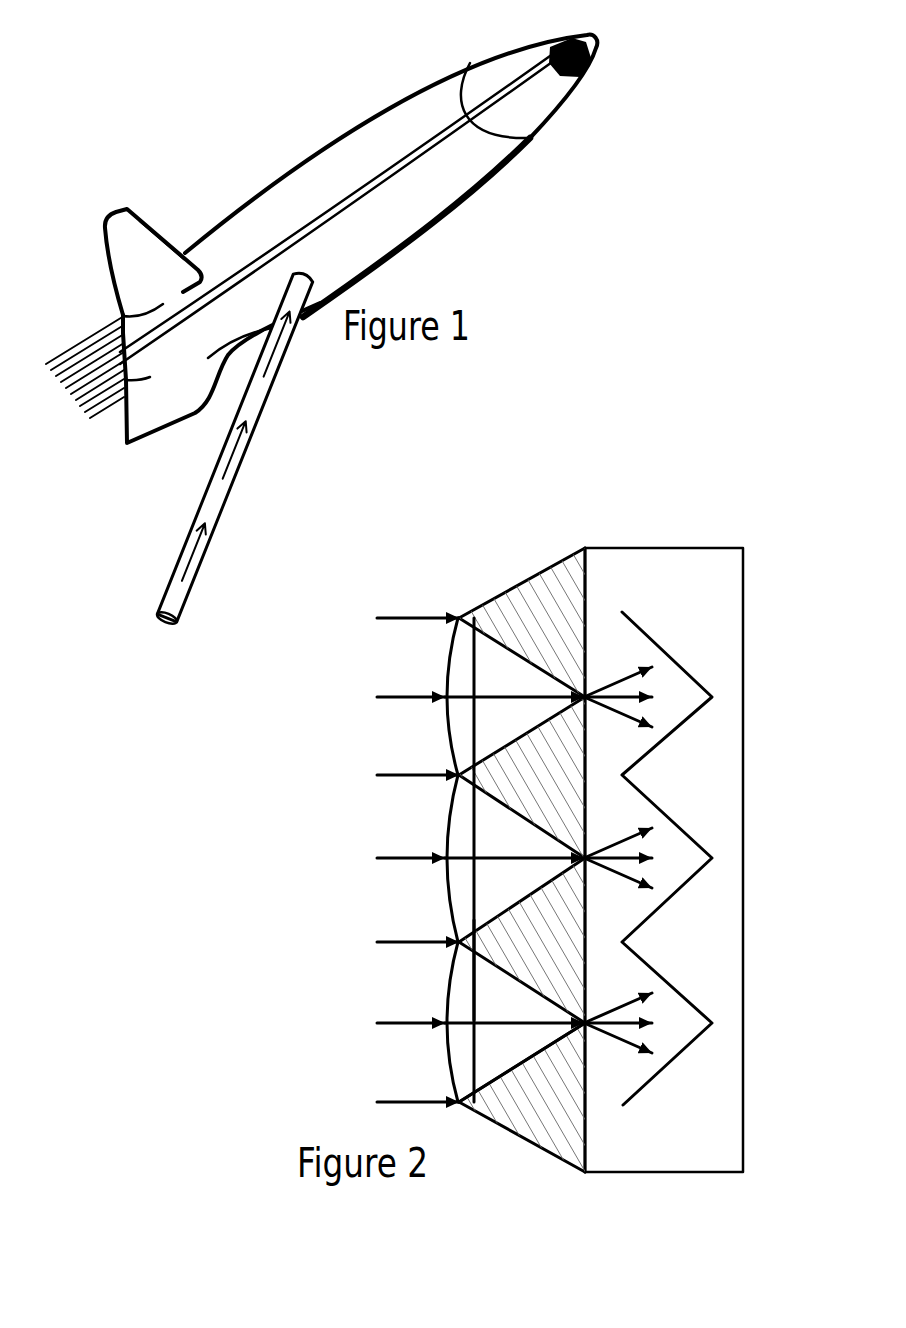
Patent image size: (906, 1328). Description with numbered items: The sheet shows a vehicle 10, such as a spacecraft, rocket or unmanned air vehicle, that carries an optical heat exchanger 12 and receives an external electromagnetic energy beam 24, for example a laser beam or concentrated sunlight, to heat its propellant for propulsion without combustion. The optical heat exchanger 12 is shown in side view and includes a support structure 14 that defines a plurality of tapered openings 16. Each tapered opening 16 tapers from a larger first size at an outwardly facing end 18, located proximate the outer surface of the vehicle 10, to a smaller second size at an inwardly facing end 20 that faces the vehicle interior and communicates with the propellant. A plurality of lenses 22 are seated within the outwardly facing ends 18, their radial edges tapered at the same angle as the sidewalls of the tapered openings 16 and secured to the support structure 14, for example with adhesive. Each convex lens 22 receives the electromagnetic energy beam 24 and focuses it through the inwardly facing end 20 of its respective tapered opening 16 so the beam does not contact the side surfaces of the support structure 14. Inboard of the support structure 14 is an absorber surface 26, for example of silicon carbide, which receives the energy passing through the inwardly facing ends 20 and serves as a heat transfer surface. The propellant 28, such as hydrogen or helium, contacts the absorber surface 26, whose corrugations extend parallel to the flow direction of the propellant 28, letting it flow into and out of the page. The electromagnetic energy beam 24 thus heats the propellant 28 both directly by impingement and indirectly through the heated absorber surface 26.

In FIG. 1, the vehicle 10 is at (360, 108).
In FIG. 2, the optical heat exchanger 12 is at (488, 837).
In FIG. 2, the support structure 14 is at (537, 598).
In FIG. 2, the tapered openings 16 is at (503, 1046).
In FIG. 2, the outwardly facing end 18 is at (484, 1007).
In FIG. 2, the inwardly facing end 20 is at (592, 1037).
In FIG. 2, the lenses 22 is at (461, 665).
In FIG. 1, the electromagnetic energy beam 24 is at (220, 493).
In FIG. 2, the electromagnetic energy beam 24 is at (417, 612).
In FIG. 2, the absorber surface 26 is at (688, 998).
In FIG. 2, the propellant 28 is at (720, 888).